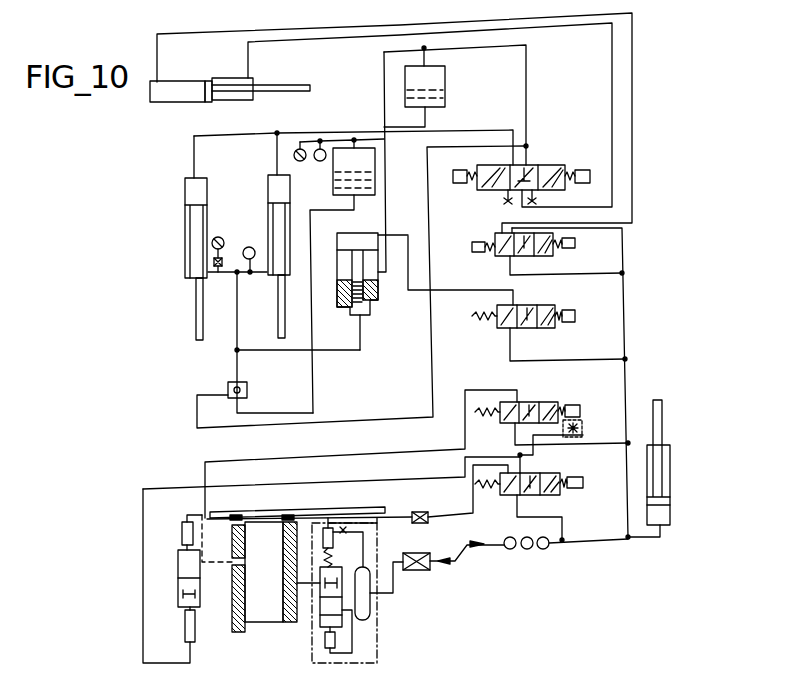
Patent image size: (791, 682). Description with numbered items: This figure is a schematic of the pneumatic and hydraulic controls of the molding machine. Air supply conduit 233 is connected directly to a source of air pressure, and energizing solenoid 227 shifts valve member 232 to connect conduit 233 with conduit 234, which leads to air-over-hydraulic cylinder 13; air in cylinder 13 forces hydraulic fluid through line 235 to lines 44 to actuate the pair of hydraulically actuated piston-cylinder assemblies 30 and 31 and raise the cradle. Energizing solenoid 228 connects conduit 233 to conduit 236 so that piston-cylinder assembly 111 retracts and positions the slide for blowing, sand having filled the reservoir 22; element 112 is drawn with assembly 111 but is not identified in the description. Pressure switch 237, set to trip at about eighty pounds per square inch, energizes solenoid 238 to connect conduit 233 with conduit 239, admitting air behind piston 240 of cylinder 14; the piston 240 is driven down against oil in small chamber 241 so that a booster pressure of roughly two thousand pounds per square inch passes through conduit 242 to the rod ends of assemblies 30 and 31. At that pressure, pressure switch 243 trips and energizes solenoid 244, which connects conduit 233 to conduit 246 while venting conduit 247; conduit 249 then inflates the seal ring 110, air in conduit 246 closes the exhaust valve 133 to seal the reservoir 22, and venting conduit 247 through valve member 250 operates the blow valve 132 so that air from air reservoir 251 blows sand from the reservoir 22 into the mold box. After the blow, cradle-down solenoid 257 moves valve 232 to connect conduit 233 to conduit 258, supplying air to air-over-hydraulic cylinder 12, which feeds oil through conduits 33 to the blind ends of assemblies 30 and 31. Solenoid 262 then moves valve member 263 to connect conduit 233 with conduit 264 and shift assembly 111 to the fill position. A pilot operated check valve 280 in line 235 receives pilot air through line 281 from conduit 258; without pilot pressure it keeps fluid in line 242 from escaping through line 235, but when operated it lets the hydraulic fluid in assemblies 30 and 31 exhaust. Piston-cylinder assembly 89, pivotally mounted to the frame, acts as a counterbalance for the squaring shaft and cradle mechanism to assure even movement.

The air-over-hydraulic cylinder 12 is at (447, 80).
The air-over-hydraulic cylinder 13 is at (376, 160).
The cylinder 14 is at (378, 302).
The reservoir 22 is at (250, 583).
The piston-cylinder assembly 30 is at (207, 203).
The piston-cylinder assembly 31 is at (268, 210).
The conduits 33 is at (194, 153).
The lines 44 is at (228, 275).
The piston-cylinder assembly 89 is at (672, 478).
The seal ring 110 is at (288, 514).
The piston-cylinder assembly 111 is at (186, 81).
The piston rod 112 is at (288, 83).
The blow valve 132 is at (378, 643).
The exhaust valve 133 is at (178, 580).
The solenoid 227 is at (460, 185).
The solenoid 228 is at (475, 253).
The valve member 232 is at (540, 165).
The air supply conduit 233 is at (630, 312).
The conduit 234 is at (457, 131).
The line 235 is at (315, 375).
The conduit 236 is at (612, 110).
The pressure switch 237 is at (319, 161).
The solenoid 238 is at (578, 299).
The conduit 239 is at (450, 292).
The piston 240 is at (354, 247).
The small chamber 241 is at (353, 303).
The conduit 242 is at (281, 350).
The pressure switch 243 is at (250, 248).
The solenoid 244 is at (577, 490).
The conduit 246 is at (412, 478).
The conduit 247 is at (402, 504).
The conduit 249 is at (340, 455).
The valve member 250 is at (545, 471).
The air reservoir 251 is at (370, 610).
The cradle-down solenoid 257 is at (582, 170).
The conduit 258 is at (526, 85).
The solenoid 262 is at (577, 241).
The valve member 263 is at (533, 257).
The conduit 264 is at (632, 135).
The pilot operated check valve 280 is at (228, 388).
The line 281 is at (390, 420).